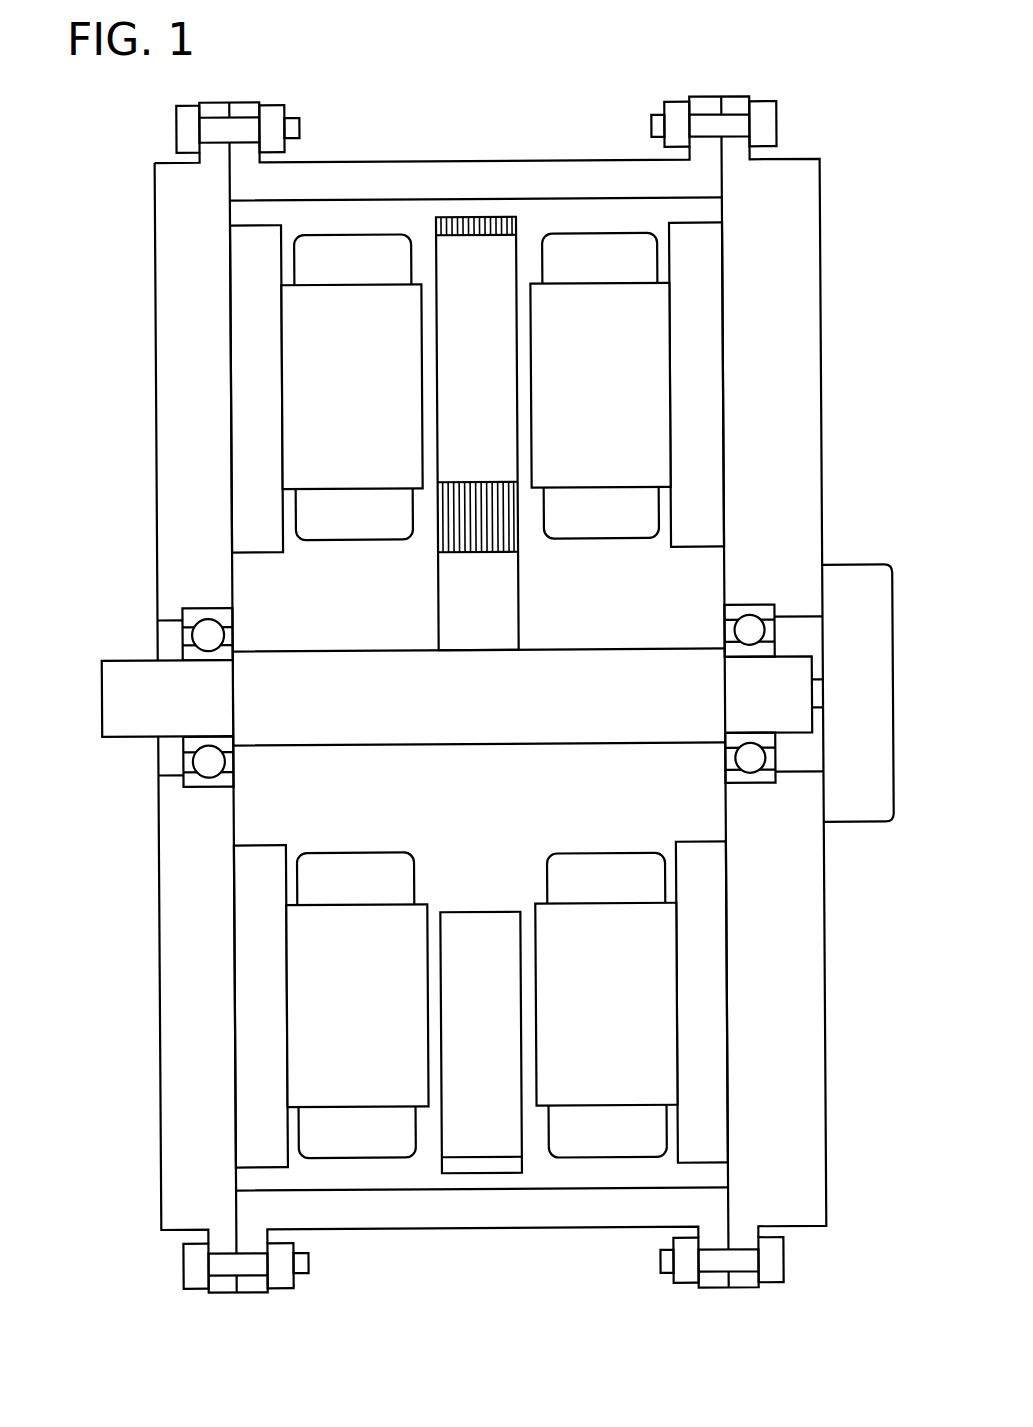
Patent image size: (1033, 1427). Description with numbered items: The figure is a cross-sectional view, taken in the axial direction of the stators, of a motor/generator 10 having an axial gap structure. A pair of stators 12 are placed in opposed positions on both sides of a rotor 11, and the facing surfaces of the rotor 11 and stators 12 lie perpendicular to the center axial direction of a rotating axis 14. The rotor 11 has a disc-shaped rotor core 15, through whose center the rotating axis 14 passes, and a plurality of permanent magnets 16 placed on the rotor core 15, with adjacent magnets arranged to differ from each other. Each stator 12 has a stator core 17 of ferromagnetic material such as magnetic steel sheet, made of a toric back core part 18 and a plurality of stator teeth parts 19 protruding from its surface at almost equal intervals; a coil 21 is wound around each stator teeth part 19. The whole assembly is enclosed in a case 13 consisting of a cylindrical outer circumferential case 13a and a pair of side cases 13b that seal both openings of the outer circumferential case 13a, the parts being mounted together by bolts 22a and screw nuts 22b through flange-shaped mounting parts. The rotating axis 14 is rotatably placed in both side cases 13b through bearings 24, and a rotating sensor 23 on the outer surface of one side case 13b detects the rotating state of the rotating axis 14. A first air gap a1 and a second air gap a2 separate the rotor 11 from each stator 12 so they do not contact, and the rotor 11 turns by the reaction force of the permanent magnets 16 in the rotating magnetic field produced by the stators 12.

The motor/generator 10 is at (796, 72).
The rotor 11 is at (427, 620).
The stator 12 is at (369, 220).
The case 13 is at (151, 215).
The outer circumferential case 13a is at (265, 187).
The side case 13b is at (206, 292).
The rotating axis 14 is at (155, 707).
The rotor core 15 is at (503, 768).
The permanent magnet 16 is at (500, 252).
The stator core 17 is at (730, 333).
The back core part 18 is at (691, 410).
The stator teeth part 19 is at (641, 347).
The coil 21 is at (349, 270).
The bolt 22a is at (178, 130).
The screw nut 22b is at (284, 117).
The rotating sensor 23 is at (849, 702).
The bearing 24 is at (207, 789).
The first air gap a1 is at (431, 488).
The second air gap a2 is at (527, 488).